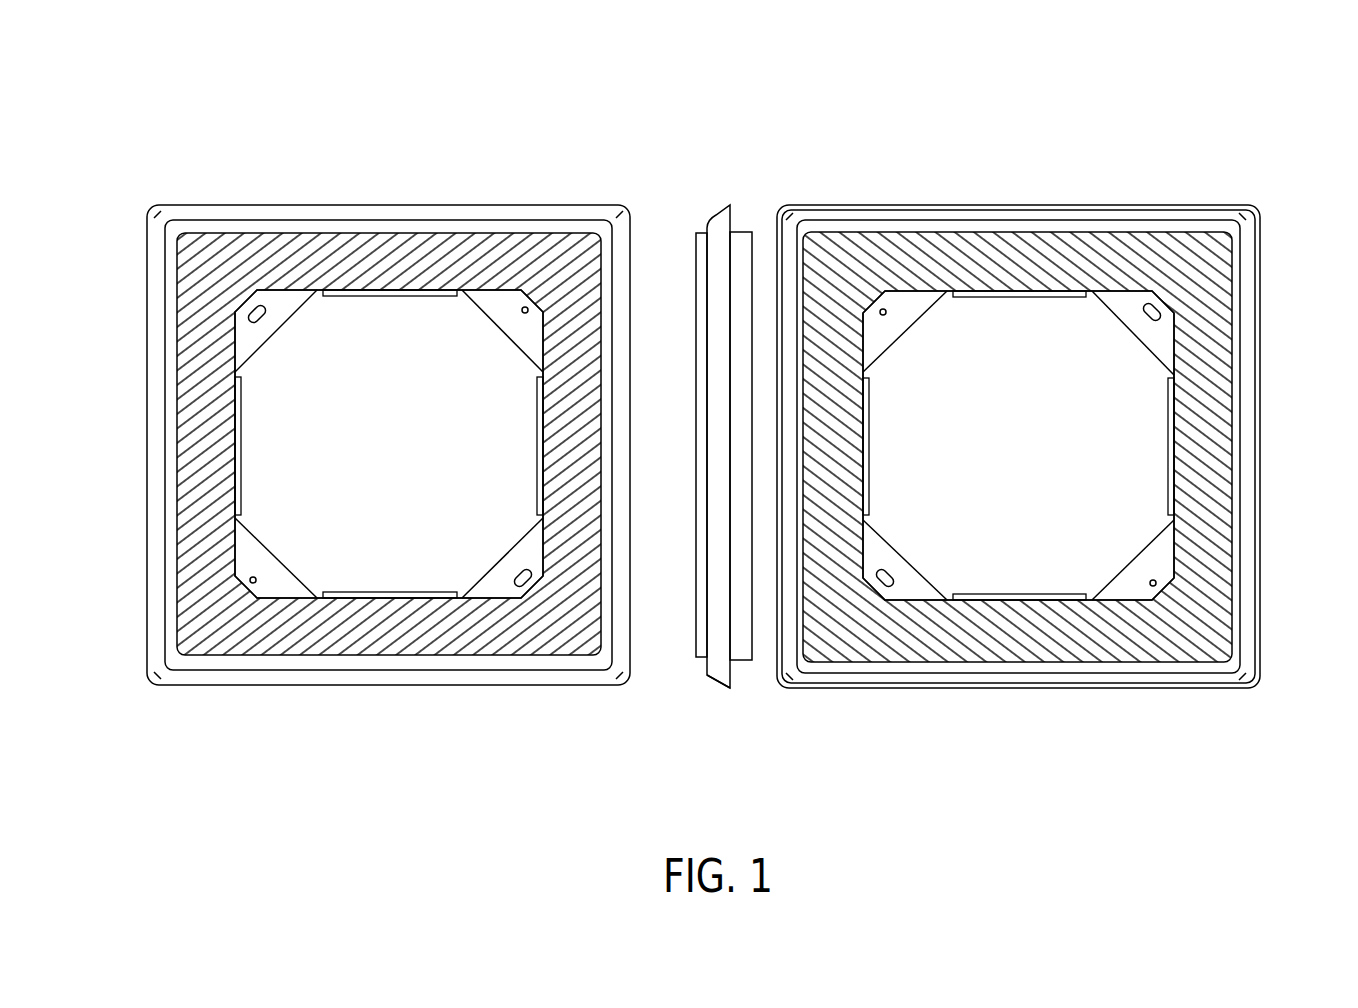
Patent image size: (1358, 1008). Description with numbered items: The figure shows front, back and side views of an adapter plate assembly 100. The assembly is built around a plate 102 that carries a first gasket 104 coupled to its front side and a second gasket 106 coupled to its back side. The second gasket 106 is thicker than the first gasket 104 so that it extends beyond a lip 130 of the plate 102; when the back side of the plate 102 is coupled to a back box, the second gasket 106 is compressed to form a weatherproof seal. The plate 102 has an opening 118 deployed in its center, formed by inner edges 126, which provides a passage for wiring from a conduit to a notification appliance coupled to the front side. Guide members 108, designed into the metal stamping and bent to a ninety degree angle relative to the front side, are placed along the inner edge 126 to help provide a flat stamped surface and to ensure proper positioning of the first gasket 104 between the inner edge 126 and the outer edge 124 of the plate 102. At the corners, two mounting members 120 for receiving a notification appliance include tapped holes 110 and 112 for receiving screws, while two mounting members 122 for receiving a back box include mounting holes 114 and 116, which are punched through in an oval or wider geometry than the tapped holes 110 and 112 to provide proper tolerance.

The adapter plate assembly 100 is at (1222, 51).
The plate 102 is at (372, 195).
The first gasket 104 is at (487, 630).
The second gasket 106 is at (750, 212).
The guide members 108 is at (352, 298).
The tapped hole 110 is at (287, 565).
The tapped hole 112 is at (500, 318).
The mounting hole 114 is at (262, 320).
The mounting hole 116 is at (500, 585).
The opening 118 is at (365, 443).
The mounting member 120 is at (503, 360).
The mounting member 122 is at (247, 342).
The outer edge 124 is at (490, 205).
The inner edge 126 is at (425, 297).
The lip 130 is at (710, 675).